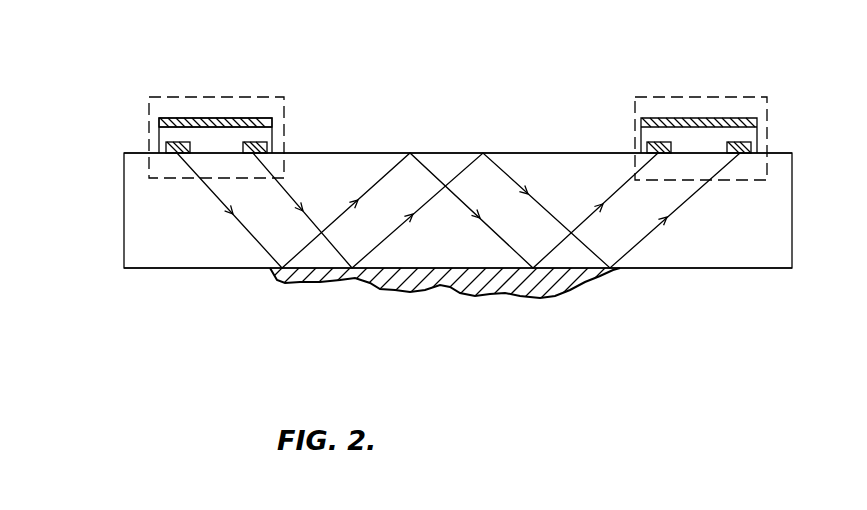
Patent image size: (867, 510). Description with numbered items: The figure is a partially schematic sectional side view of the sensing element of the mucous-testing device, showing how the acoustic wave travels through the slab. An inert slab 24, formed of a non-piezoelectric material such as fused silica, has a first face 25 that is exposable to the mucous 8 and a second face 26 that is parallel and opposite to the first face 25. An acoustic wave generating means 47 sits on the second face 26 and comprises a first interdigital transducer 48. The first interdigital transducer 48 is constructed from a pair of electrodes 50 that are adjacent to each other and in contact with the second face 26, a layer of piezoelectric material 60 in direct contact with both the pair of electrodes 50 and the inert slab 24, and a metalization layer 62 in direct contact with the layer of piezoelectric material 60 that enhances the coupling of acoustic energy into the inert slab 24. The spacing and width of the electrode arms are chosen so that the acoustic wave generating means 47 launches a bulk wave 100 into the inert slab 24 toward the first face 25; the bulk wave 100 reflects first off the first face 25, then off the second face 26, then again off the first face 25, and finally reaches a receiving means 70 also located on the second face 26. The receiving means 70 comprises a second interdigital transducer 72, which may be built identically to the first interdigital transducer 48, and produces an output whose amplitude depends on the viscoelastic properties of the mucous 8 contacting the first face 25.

The mucous 8 is at (480, 293).
The inert slab 24 is at (765, 217).
The first face 25 is at (684, 268).
The second face 26 is at (378, 153).
The acoustic wave generating means 47 is at (180, 97).
The first interdigital transducer 48 is at (218, 147).
The pair of electrodes 50 is at (183, 142).
The layer of piezoelectric material 60 is at (159, 135).
The metalization layer 62 is at (160, 120).
The receiving means 70 is at (765, 95).
The second interdigital transducer 72 is at (705, 147).
The bulk wave 100 is at (303, 212).